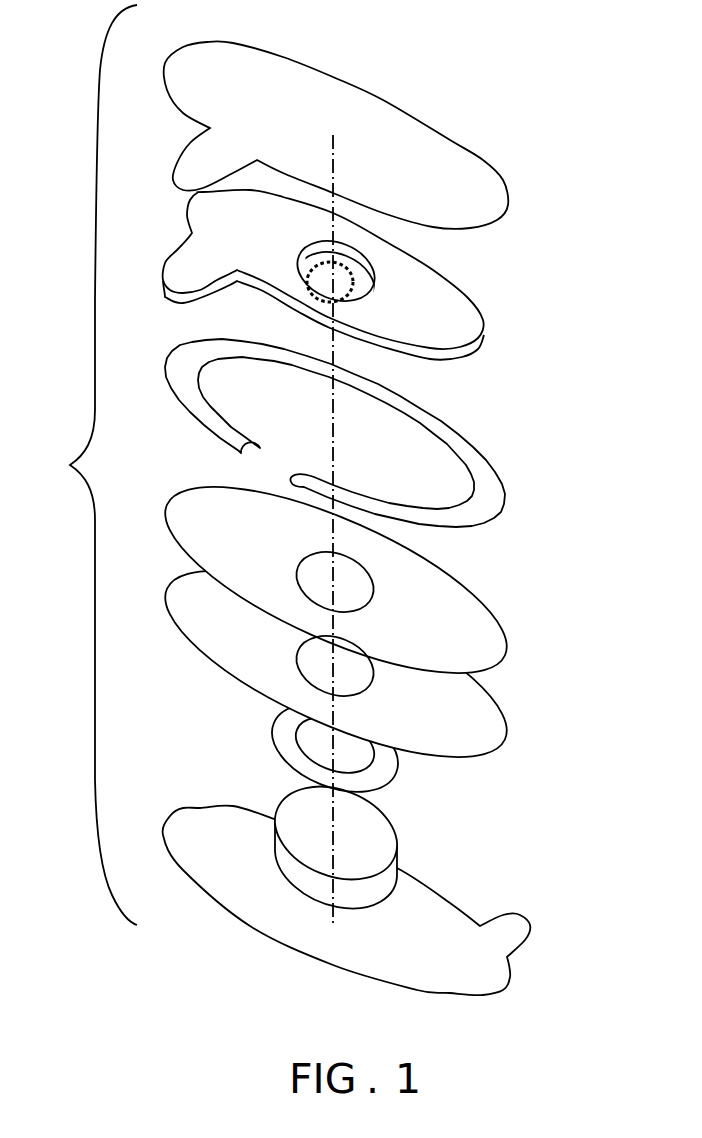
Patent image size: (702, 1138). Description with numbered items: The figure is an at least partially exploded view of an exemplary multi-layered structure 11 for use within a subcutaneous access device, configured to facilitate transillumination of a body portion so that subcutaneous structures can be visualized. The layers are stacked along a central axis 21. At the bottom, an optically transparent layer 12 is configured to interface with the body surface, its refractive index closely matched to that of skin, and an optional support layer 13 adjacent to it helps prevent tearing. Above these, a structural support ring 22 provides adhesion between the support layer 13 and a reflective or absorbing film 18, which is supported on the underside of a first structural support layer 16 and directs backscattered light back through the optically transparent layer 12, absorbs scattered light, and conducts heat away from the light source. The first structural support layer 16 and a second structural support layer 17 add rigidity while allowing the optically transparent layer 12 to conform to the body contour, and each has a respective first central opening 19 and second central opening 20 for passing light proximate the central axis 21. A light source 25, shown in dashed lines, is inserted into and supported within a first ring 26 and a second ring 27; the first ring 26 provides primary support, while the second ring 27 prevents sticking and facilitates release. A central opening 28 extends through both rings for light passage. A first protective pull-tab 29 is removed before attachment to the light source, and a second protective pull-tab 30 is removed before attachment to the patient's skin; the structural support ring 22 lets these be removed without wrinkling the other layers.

The multi-layered structure 11 is at (91, 465).
The optically transparent layer 12 is at (393, 887).
The support layer 13 is at (391, 843).
The first structural support layer 16 is at (477, 717).
The second structural support layer 17 is at (480, 618).
The reflective or absorbing film 18 is at (361, 664).
The first central opening 19 is at (313, 658).
The second central opening 20 is at (350, 582).
The central axis 21 is at (498, 472).
The structural support ring 22 is at (277, 738).
The light source 25 is at (311, 293).
The first ring 26 is at (484, 357).
The second ring 27 is at (448, 276).
The central opening 28 is at (358, 288).
The first protective pull-tab 29 is at (434, 157).
The second protective pull-tab 30 is at (335, 546).